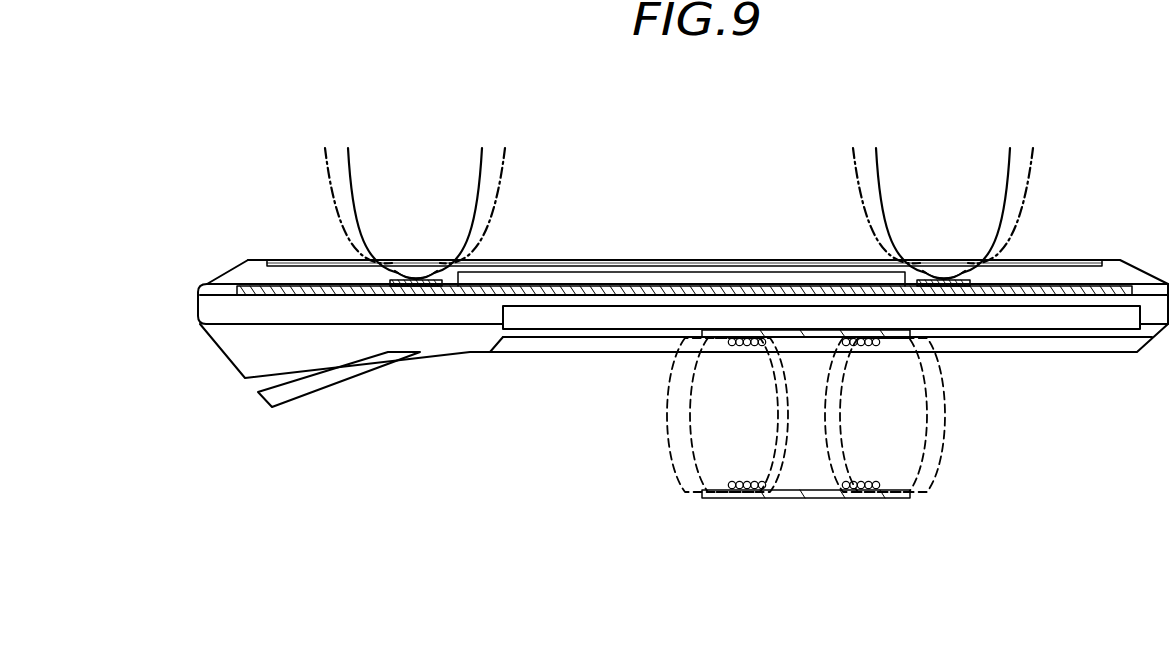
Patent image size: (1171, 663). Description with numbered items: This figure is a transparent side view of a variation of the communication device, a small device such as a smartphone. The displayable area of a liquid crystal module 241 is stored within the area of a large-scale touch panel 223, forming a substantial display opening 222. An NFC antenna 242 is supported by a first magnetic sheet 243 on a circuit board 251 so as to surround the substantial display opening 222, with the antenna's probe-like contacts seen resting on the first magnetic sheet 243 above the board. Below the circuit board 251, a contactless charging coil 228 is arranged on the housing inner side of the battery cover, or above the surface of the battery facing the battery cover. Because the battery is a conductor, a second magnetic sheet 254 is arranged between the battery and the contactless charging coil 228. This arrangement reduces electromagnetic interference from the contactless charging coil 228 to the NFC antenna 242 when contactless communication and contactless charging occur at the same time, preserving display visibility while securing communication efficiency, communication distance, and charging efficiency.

The substantial display opening 222 is at (442, 260).
The large-scale touch panel 223 is at (725, 261).
The liquid crystal module 241 is at (568, 280).
The NFC antenna 242 is at (413, 272).
The first magnetic sheet 243 is at (390, 283).
The circuit board 251 is at (250, 293).
The second magnetic sheet 254 is at (703, 332).
The contactless charging coil 228 is at (870, 350).